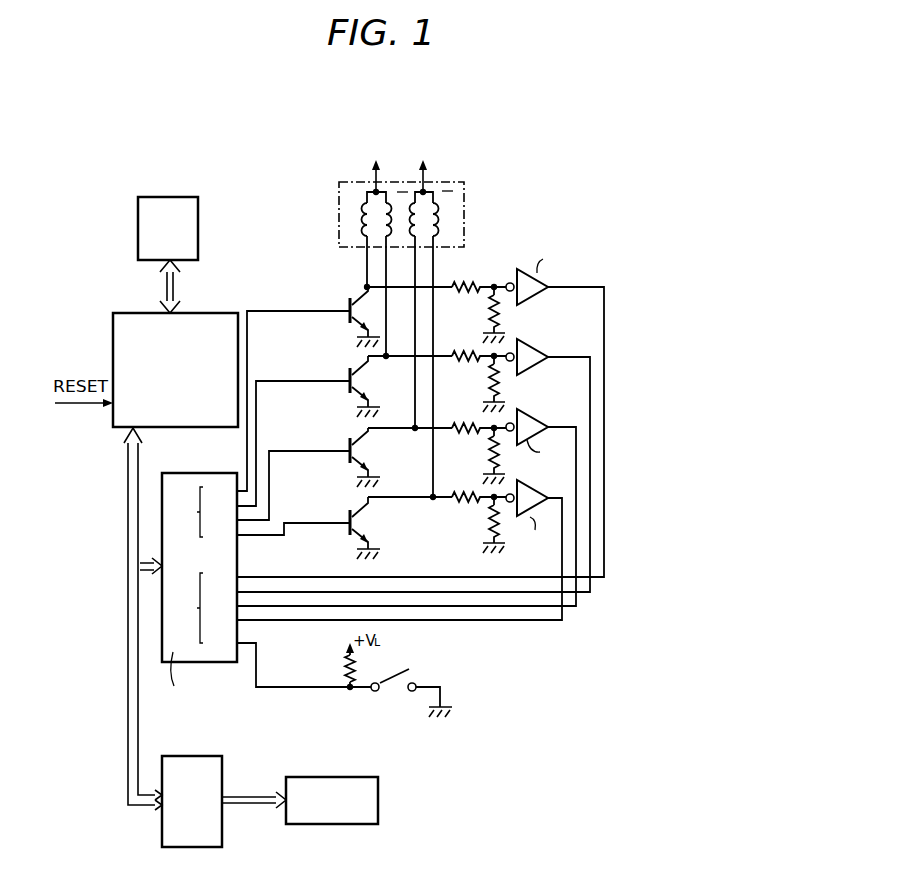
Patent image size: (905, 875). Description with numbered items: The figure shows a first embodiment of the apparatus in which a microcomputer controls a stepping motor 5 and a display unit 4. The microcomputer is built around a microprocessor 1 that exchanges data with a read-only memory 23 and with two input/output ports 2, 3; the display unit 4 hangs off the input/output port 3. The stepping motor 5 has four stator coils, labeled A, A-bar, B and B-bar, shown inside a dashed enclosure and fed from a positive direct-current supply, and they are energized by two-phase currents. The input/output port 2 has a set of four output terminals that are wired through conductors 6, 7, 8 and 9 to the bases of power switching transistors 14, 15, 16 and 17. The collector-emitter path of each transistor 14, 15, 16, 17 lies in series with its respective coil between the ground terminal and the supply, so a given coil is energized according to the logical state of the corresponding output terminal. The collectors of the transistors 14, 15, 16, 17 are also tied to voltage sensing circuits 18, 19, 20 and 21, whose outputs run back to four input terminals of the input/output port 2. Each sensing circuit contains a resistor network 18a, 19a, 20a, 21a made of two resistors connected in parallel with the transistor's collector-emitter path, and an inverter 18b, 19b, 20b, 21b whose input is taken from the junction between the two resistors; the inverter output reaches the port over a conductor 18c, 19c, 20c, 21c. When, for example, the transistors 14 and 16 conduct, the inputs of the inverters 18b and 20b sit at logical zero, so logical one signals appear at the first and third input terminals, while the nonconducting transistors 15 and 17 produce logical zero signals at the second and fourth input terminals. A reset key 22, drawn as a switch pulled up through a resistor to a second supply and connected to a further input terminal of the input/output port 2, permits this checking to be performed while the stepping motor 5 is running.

The microprocessor 1 is at (113, 338).
The input/output port 2 is at (182, 473).
The input/output port 3 is at (198, 756).
The display unit 4 is at (319, 777).
The stepping motor 5 is at (338, 222).
The conductor 6 is at (282, 311).
The conductor 7 is at (288, 381).
The conductor 8 is at (290, 451).
The conductor 9 is at (302, 523).
The power switching transistor 14 is at (348, 306).
The power switching transistor 15 is at (358, 382).
The power switching transistor 16 is at (360, 452).
The power switching transistor 17 is at (358, 522).
The voltage sensing circuit 18 is at (524, 261).
The resistor network 18a is at (481, 295).
The inverter 18b is at (556, 259).
The conductor 18c is at (595, 287).
The voltage sensing circuit 19 is at (536, 330).
The resistor network 19a is at (480, 370).
The inverter 19b is at (567, 373).
The conductor 19c is at (590, 357).
The voltage sensing circuit 20 is at (540, 403).
The resistor network 20a is at (477, 440).
The inverter 20b is at (551, 451).
The conductor 20c is at (576, 427).
The voltage sensing circuit 21 is at (530, 471).
The resistor network 21a is at (477, 508).
The inverter 21b is at (535, 534).
The conductor 21c is at (562, 502).
The reset key 22 is at (401, 674).
The read-only memory 23 is at (163, 197).